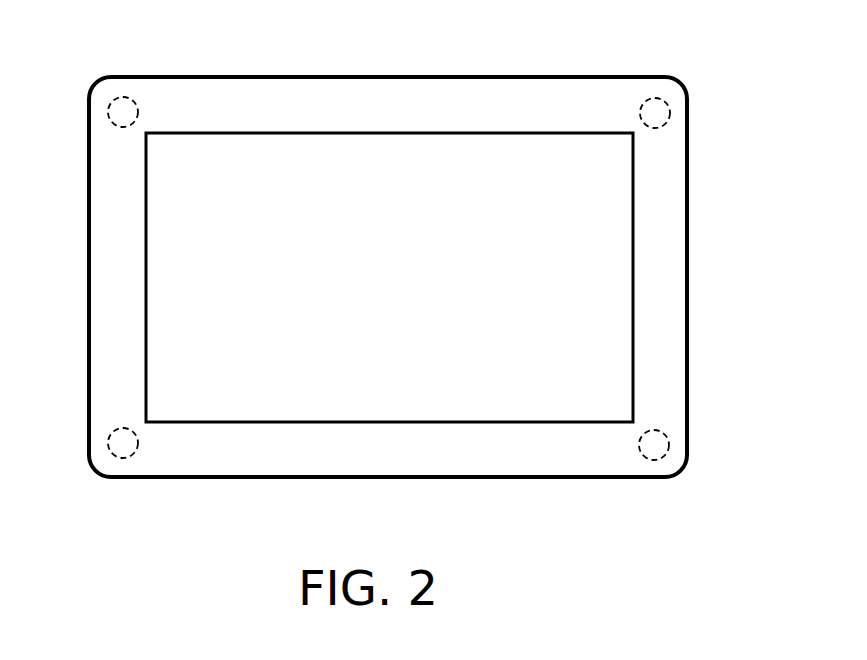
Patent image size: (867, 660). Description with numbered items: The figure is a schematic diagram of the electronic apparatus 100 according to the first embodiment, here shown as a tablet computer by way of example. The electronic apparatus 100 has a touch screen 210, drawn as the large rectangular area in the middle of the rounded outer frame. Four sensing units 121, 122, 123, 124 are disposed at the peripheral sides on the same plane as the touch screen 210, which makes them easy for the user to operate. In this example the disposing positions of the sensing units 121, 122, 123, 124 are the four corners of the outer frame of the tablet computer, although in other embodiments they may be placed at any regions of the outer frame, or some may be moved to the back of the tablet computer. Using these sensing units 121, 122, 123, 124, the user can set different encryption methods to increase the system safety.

The electronic apparatus 100 is at (762, 547).
The touch screen 210 is at (633, 277).
The sensing unit 121 is at (117, 124).
The sensing unit 122 is at (662, 125).
The sensing unit 123 is at (117, 431).
The sensing unit 124 is at (662, 432).